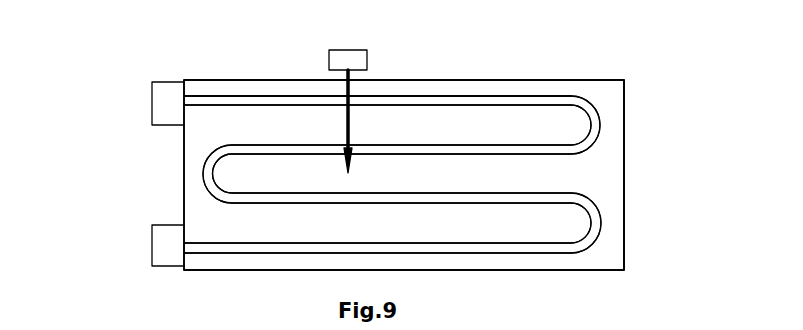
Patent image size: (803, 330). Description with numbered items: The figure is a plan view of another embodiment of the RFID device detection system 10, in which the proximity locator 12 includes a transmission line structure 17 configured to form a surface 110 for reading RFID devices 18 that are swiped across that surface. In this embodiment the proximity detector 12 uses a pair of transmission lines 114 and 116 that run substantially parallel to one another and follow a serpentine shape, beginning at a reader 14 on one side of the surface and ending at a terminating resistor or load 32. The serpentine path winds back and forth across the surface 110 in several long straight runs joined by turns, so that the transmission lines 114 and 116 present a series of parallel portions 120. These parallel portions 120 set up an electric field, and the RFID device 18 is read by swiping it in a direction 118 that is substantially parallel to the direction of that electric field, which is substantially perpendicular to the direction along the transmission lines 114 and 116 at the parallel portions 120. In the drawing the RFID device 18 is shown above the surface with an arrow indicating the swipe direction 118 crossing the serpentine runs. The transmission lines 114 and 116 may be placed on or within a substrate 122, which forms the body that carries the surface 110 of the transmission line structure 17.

The RFID device detection system 10 is at (140, 55).
The proximity locator 12 is at (215, 48).
The reader 14 is at (161, 101).
The transmission line structure 17 is at (399, 70).
The RFID device 18 is at (353, 57).
The terminating resistor or load 32 is at (158, 245).
The surface 110 is at (606, 97).
The transmission line 114 is at (470, 105).
The transmission line 116 is at (500, 97).
The swipe direction 118 is at (349, 118).
The parallel portions 120 is at (454, 262).
The substrate 122 is at (624, 135).